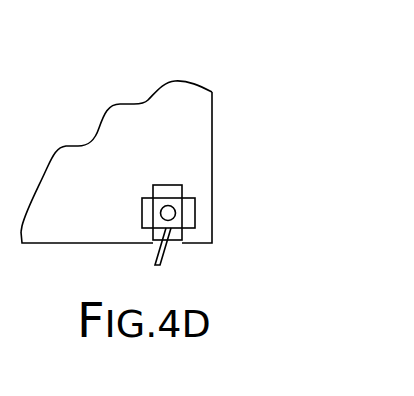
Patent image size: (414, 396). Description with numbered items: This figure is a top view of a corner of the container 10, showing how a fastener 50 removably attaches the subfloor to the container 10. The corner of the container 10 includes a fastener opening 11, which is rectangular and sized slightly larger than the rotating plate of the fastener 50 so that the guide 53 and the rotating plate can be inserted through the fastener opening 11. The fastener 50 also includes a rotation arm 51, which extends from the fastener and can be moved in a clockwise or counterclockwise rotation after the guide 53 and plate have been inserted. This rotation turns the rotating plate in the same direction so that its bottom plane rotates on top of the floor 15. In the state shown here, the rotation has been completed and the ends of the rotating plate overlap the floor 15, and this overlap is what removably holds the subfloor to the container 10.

The container 10 is at (213, 125).
The floor 15 is at (115, 187).
The fastener opening 11 is at (141, 211).
The fastener 50 is at (174, 185).
The guide 53 is at (175, 207).
The rotation arm 51 is at (156, 253).